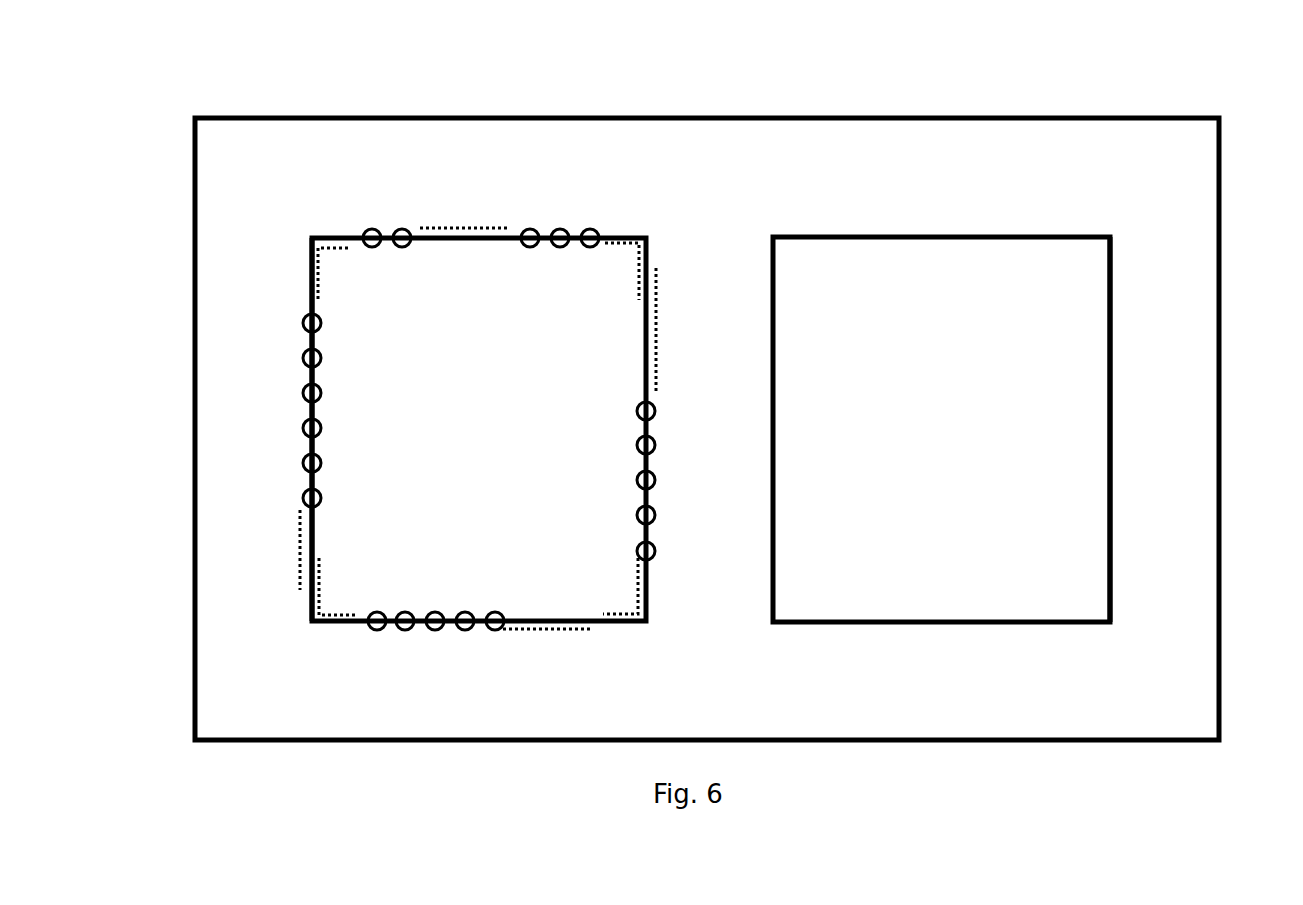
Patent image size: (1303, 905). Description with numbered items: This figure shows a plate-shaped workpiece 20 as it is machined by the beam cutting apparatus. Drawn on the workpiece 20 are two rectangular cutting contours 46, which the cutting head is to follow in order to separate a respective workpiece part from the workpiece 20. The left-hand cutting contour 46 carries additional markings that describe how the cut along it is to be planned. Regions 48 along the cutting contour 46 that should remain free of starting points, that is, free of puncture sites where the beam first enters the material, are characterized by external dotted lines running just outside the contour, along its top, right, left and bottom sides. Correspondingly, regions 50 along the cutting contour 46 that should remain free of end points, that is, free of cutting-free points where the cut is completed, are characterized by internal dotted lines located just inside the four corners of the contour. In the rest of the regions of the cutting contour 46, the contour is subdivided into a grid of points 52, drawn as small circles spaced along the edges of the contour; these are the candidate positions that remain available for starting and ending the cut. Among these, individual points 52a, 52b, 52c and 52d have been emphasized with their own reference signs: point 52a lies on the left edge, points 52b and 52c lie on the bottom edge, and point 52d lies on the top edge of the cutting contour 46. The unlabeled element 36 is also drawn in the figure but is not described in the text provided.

The workpiece 20 is at (225, 205).
The component chip 36 is at (432, 375).
The cutting contour 46 is at (308, 448).
The regions free of starting points 48 is at (460, 225).
The regions free of end points 50 is at (328, 622).
The grid of points 52 is at (377, 441).
The point 52a is at (303, 357).
The point 52b is at (405, 622).
The point 52c is at (493, 622).
The point 52d is at (530, 232).